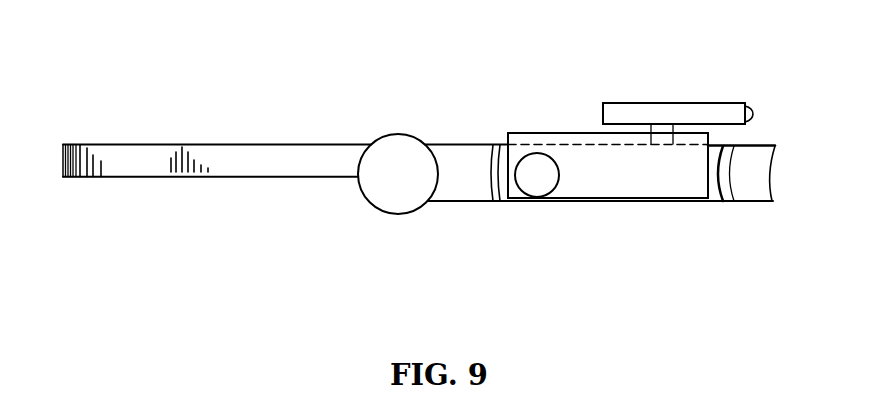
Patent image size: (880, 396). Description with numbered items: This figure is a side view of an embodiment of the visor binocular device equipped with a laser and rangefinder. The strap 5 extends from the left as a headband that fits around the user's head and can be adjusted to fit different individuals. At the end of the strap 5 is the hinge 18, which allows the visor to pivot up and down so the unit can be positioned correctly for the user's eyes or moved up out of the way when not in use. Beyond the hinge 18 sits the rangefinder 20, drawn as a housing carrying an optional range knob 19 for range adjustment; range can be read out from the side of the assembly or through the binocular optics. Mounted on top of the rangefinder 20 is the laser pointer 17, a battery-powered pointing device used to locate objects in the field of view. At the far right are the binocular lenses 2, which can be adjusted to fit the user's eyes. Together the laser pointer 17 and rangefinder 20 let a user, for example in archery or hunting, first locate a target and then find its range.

The binocular lenses 2 is at (750, 190).
The strap 5 is at (93, 144).
The laser pointer 17 is at (661, 103).
The hinge 18 is at (394, 135).
The range knob 19 is at (551, 197).
The range finder 20 is at (626, 185).